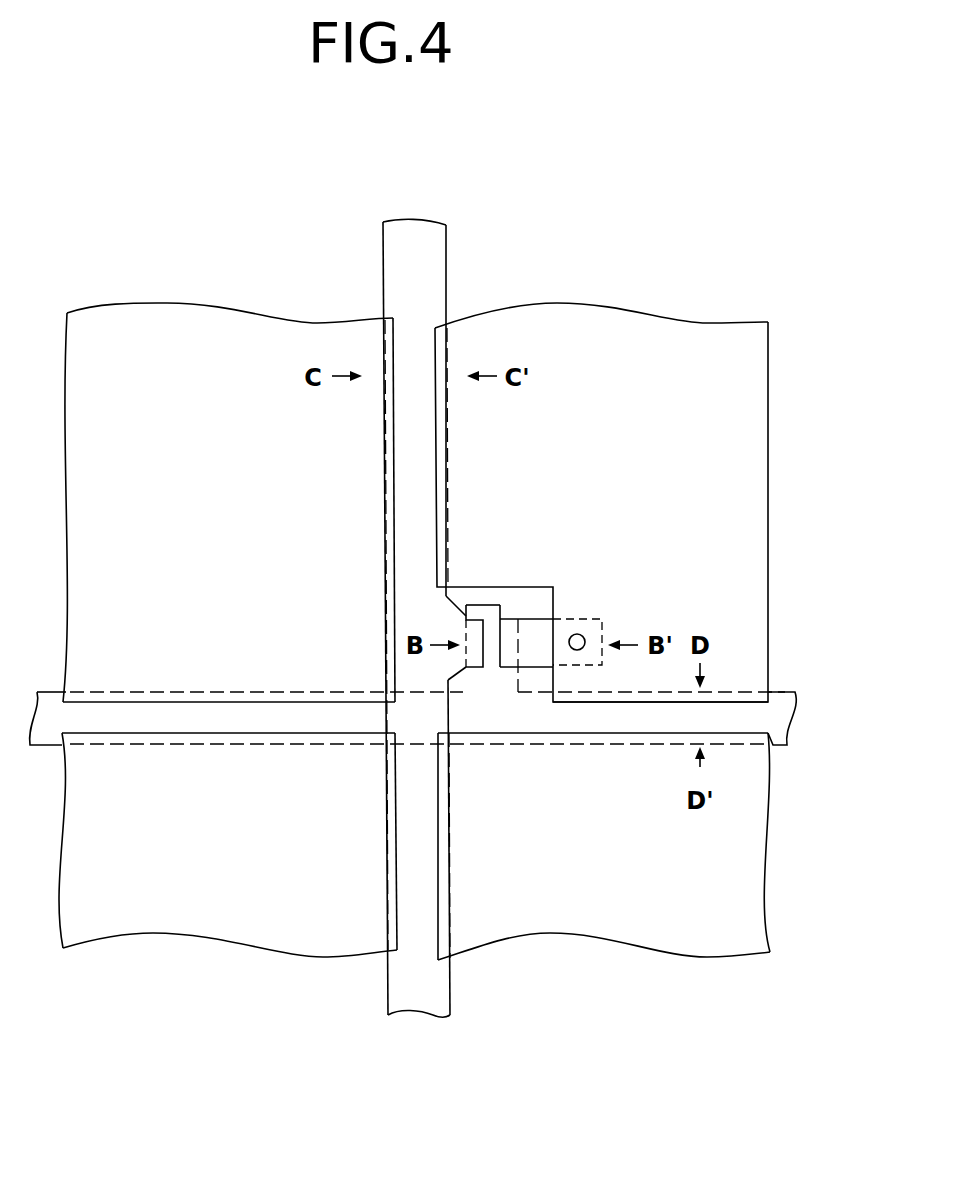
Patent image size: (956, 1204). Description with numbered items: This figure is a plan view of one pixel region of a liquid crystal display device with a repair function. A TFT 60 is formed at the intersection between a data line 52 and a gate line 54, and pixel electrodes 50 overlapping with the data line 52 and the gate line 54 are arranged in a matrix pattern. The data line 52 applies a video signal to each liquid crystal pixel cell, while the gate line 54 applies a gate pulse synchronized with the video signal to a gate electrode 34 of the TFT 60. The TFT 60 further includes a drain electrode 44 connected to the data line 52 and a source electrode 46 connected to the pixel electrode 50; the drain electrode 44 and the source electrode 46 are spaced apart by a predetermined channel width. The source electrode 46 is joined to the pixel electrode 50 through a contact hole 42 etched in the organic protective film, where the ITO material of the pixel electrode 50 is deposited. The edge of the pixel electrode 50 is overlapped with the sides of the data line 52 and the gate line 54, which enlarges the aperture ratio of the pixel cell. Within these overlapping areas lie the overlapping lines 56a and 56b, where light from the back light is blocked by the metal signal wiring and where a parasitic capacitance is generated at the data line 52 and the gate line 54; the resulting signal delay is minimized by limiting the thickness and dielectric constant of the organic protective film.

The gate electrode 34 is at (498, 612).
The contact hole 42 is at (580, 640).
The drain electrode 44 is at (473, 638).
The source electrode 46 is at (588, 628).
The pixel electrode 50 is at (762, 587).
The data line 52 is at (446, 236).
The gate line 54 is at (790, 705).
The overlapping line 56a is at (443, 347).
The overlapping line 56b is at (745, 695).
The TFT 60 is at (488, 603).